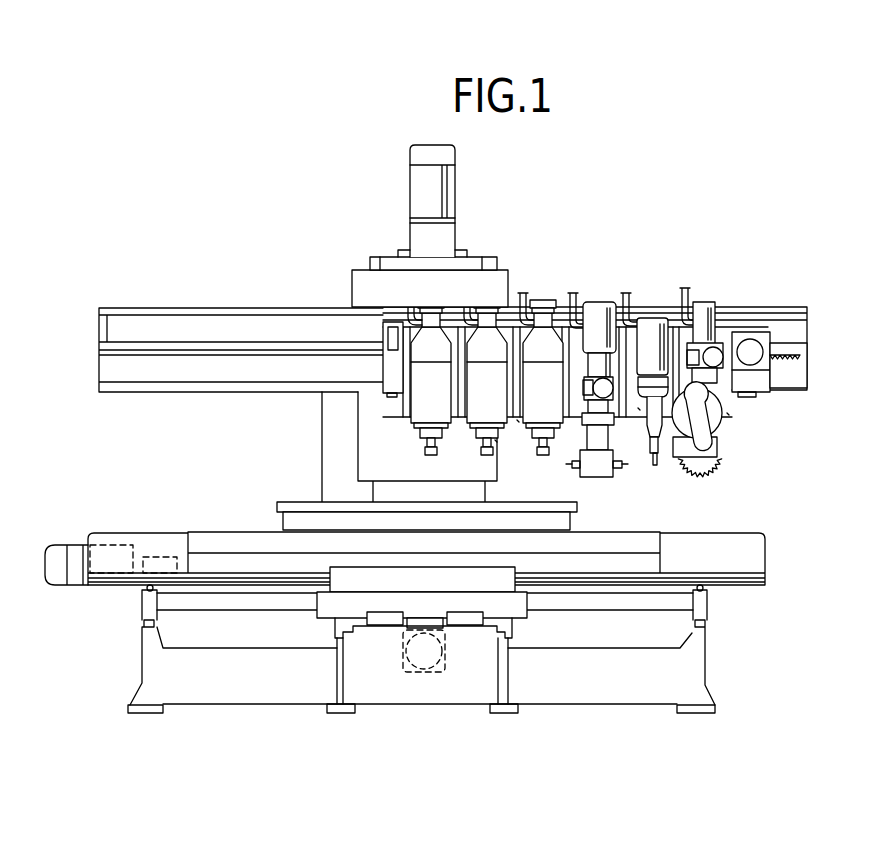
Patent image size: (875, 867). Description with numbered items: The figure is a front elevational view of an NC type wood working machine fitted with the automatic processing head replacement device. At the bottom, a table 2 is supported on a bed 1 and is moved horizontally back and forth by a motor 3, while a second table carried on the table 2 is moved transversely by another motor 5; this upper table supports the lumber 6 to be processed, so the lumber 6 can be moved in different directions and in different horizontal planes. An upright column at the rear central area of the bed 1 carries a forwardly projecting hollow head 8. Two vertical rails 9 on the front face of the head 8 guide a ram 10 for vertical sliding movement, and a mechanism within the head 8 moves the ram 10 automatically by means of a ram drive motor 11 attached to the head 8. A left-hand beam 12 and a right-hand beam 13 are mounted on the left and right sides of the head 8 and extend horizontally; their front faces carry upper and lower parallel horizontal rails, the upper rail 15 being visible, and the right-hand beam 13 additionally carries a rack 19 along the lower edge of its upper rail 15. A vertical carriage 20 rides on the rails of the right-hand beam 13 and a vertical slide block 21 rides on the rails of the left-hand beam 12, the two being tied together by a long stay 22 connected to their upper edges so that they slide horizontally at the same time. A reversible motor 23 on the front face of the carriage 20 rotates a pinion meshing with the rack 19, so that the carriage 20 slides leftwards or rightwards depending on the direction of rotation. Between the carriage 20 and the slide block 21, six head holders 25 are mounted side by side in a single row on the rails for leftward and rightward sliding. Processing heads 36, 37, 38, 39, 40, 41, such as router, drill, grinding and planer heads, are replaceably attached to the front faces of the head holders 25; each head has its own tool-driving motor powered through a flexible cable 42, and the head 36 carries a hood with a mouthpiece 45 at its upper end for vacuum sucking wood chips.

The bed 1 is at (582, 695).
The table 2 is at (388, 602).
The motor 3 is at (428, 667).
The motor 5 is at (75, 550).
The lumber 6 is at (277, 508).
The head 8 is at (458, 260).
The vertical rails 9 is at (492, 263).
The ram 10 is at (440, 277).
The ram drive motor 11 is at (417, 200).
The left-hand beam 12 is at (158, 308).
The right-hand beam 13 is at (787, 303).
The upper rail 15 is at (800, 347).
The rack 19 is at (783, 363).
The carriage 20 is at (760, 378).
The slide block 21 is at (390, 372).
The stay 22 is at (748, 315).
The reversible motor 23 is at (748, 350).
The head holders 25 is at (517, 420).
The processing head 36 is at (420, 398).
The processing head 37 is at (483, 400).
The processing head 38 is at (542, 368).
The processing head 39 is at (597, 315).
The processing head 40 is at (648, 322).
The processing head 41 is at (703, 315).
The flexible cable 42 is at (408, 300).
The mouthpiece 45 is at (440, 297).